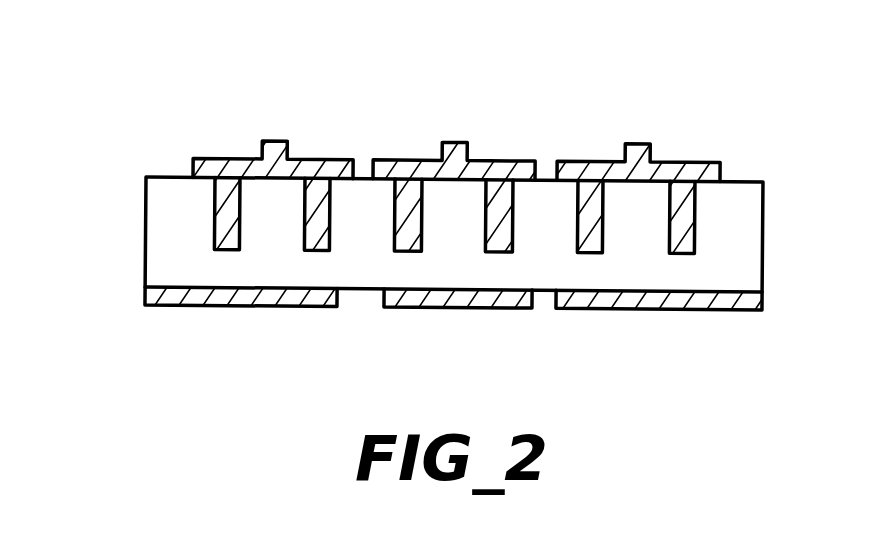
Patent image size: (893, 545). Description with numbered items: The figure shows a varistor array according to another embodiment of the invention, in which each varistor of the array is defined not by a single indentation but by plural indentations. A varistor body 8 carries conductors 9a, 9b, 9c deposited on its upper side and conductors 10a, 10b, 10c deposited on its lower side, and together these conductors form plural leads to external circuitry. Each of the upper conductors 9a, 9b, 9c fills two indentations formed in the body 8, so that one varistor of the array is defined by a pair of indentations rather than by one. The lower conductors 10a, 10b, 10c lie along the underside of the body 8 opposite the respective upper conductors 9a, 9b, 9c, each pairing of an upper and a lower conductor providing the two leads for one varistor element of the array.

The varistor body 8 is at (132, 231).
The conductor 9a is at (275, 147).
The conductor 9b is at (455, 147).
The conductor 9c is at (637, 150).
The conductor 10a is at (231, 293).
The conductor 10b is at (464, 300).
The conductor 10c is at (680, 300).